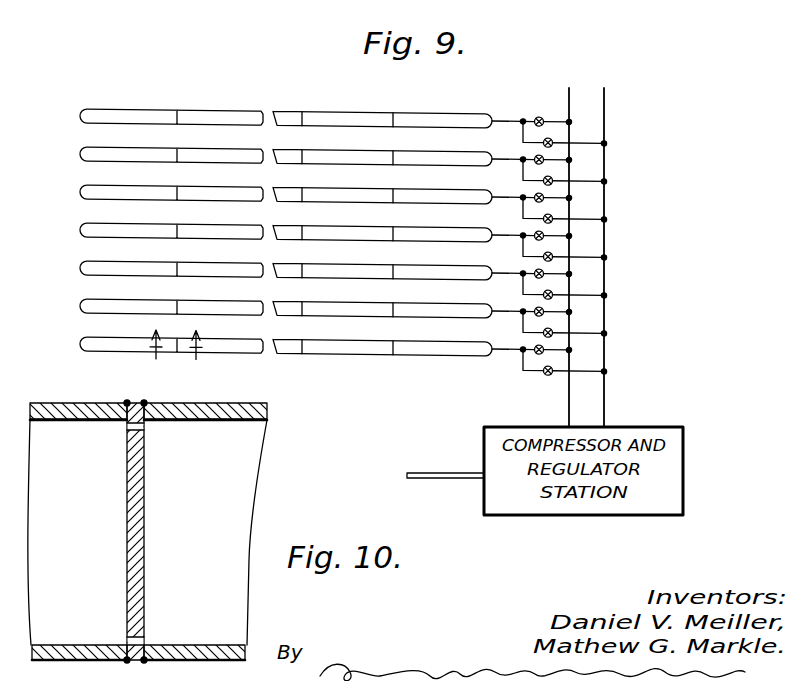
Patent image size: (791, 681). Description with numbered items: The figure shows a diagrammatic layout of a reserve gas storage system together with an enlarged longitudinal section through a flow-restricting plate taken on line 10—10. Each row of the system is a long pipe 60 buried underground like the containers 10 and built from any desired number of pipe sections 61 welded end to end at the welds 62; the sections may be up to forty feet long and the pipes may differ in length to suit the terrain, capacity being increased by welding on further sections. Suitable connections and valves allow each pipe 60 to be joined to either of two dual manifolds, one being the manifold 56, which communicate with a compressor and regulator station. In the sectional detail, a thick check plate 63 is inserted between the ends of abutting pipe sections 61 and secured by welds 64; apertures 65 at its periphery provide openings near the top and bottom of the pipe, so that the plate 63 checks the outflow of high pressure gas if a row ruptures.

In FIG. 9, the container 10 is at (174, 356).
In FIG. 9, the dual manifold 56 is at (605, 97).
In FIG. 9, the long pipe 60 is at (80, 153).
In FIG. 9, the pipe section 61 is at (293, 114).
In FIG. 10, the pipe section 61 is at (67, 403).
In FIG. 9, the weld 62 is at (393, 119).
In FIG. 10, the check plate 63 is at (140, 497).
In FIG. 10, the weld 64 is at (143, 403).
In FIG. 10, the aperture 65 is at (128, 428).